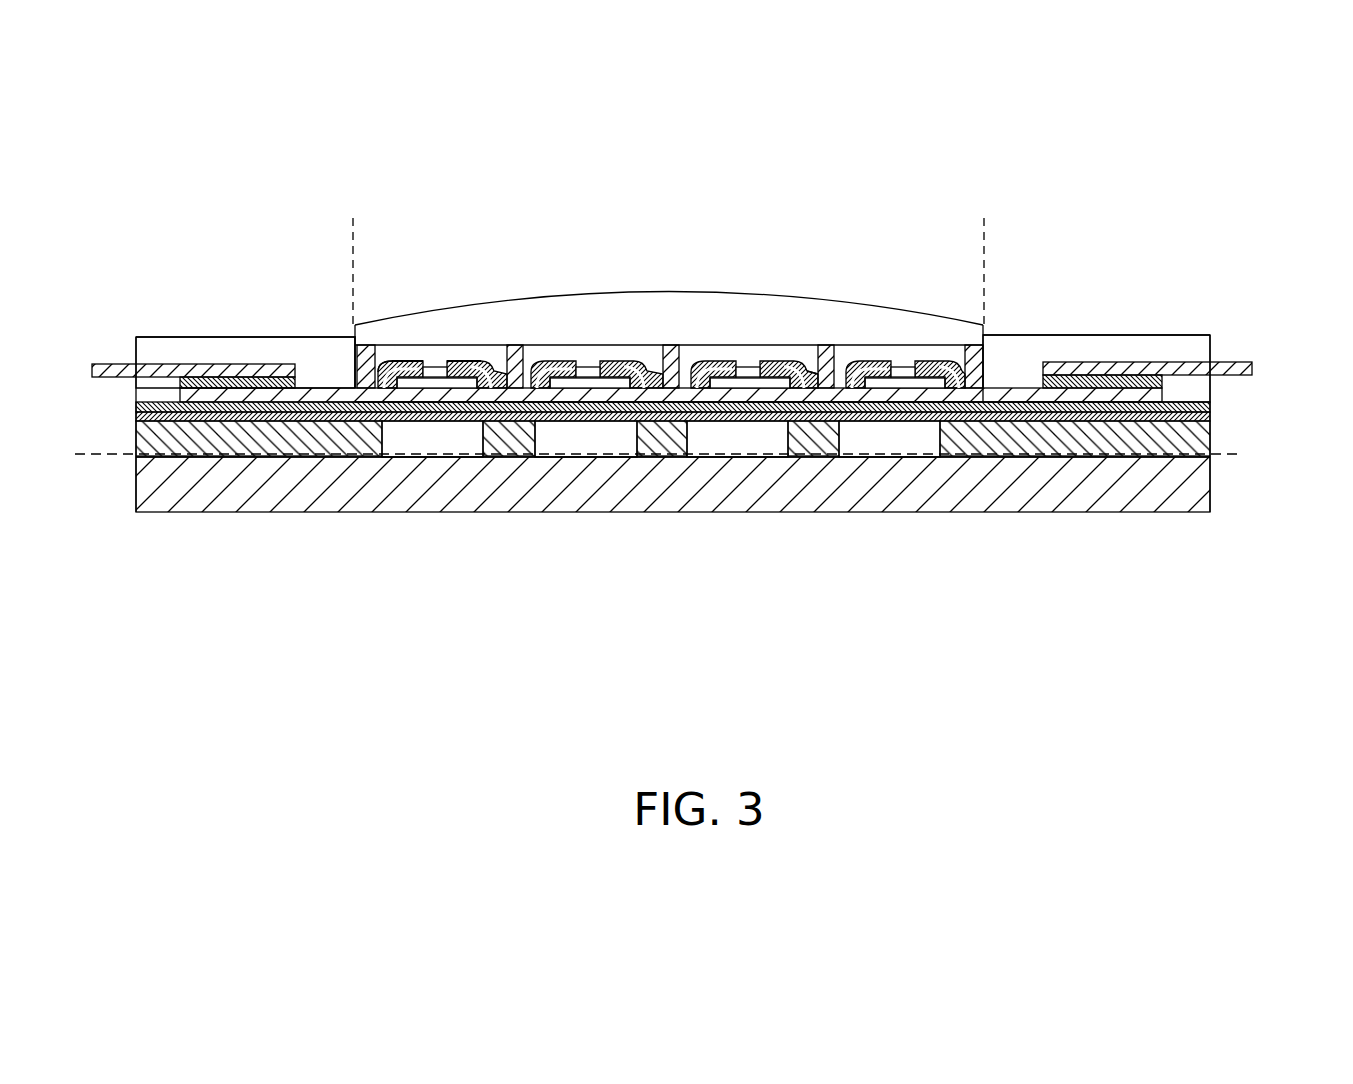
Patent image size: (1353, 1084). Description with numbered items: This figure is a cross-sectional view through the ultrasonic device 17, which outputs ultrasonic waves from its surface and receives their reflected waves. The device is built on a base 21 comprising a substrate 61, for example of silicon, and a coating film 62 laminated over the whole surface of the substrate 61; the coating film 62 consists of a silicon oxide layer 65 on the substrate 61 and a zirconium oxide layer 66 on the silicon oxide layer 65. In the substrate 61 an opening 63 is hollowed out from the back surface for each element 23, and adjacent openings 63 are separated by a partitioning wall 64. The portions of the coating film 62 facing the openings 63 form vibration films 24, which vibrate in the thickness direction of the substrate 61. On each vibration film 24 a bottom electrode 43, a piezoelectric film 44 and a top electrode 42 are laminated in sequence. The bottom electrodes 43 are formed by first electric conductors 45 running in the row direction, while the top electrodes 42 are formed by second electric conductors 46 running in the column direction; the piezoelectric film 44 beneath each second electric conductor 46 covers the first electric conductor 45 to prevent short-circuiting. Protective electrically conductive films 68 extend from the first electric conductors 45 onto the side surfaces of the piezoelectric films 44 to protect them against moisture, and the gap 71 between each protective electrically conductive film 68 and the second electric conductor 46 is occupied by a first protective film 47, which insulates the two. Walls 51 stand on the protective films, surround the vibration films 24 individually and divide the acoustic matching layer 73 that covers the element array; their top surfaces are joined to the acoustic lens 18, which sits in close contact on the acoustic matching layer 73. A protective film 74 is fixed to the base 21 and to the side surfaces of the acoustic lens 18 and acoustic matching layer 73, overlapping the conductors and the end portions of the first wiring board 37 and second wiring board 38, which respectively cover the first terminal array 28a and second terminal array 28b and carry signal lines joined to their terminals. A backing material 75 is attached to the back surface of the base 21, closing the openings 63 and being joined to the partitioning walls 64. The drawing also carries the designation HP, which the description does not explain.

The ultrasonic device 17 is at (1193, 300).
The acoustic lens 18 is at (783, 296).
The base 21 is at (133, 440).
The element 23 is at (408, 327).
The vibration film 24 is at (440, 377).
The first terminal array 28a is at (190, 378).
The second terminal array 28b is at (1072, 380).
The first flexible printed wiring board 37 is at (108, 365).
The second flexible printed wiring board 38 is at (1088, 362).
The top electrode 42 is at (433, 360).
The bottom electrode 43 is at (395, 405).
The piezoelectric film 44 is at (416, 362).
The first electric conductor 45 is at (308, 390).
The second electric conductor 46 is at (433, 272).
The first protective film 47 is at (382, 362).
The wall 51 is at (828, 372).
The substrate 61 is at (1200, 438).
The coating film 62 is at (1282, 377).
The opening 63 is at (482, 447).
The partitioning wall 64 is at (505, 400).
The silicon oxide layer 65 is at (1210, 416).
The zirconium oxide layer 66 is at (1208, 401).
The protective electrically conductive film 68 is at (378, 365).
The gap 71 is at (360, 395).
The acoustic matching layer 73 is at (622, 300).
The protective film 74 is at (222, 337).
The backing material 75 is at (1203, 500).
The horizontal plane HP is at (98, 458).